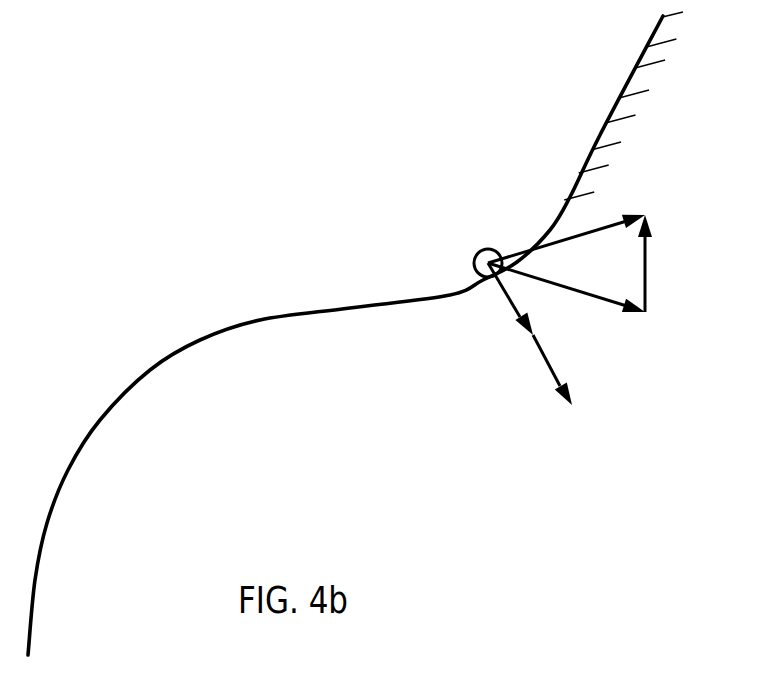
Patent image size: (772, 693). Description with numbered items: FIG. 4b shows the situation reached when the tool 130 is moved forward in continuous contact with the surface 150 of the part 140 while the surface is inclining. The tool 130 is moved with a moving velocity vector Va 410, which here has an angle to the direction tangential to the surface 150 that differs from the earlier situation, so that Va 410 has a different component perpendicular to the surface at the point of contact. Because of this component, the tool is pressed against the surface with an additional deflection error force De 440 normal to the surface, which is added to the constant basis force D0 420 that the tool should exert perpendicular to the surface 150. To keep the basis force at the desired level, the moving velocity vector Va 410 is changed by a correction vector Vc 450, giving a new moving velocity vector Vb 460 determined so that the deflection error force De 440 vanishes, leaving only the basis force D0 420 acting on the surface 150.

The surface 150 is at (638, 63).
The part 140 is at (707, 181).
The tool 130 is at (474, 262).
The new moving velocity vector Vb 460 is at (588, 233).
The moving velocity vector Va 410 is at (606, 301).
The correction vector Vc 450 is at (646, 290).
The basis force D0 420 is at (519, 321).
The deflection error force De 440 is at (545, 370).